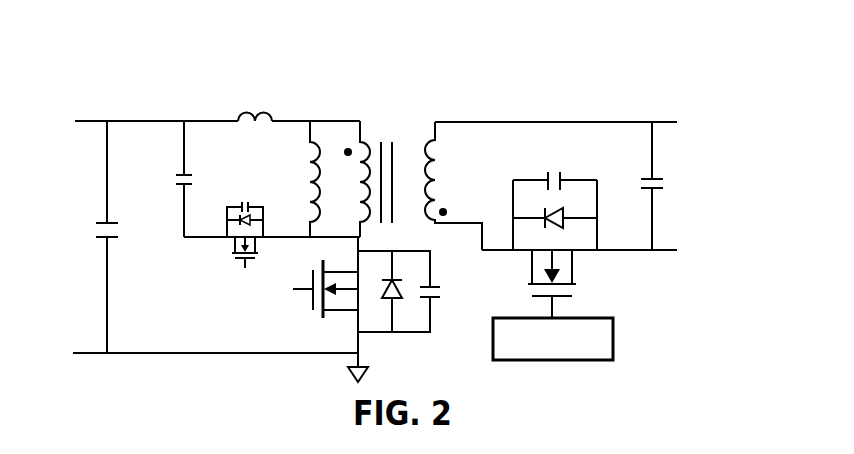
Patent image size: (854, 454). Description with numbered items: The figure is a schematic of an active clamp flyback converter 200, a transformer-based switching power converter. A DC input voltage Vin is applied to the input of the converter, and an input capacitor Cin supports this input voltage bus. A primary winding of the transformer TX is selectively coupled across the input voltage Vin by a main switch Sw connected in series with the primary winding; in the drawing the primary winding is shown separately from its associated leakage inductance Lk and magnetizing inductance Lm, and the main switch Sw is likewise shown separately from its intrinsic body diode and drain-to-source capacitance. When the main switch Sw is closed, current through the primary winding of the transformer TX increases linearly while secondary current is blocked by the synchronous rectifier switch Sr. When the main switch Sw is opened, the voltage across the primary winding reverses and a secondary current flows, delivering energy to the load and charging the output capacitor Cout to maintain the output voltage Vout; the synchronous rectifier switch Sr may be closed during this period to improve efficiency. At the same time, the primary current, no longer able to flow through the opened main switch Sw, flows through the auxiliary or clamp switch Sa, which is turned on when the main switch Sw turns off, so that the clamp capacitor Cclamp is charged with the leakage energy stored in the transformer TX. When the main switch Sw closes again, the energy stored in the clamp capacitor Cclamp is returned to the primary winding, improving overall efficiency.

The active clamp flyback converter 200 is at (327, 80).
The input voltage Vin is at (61, 236).
The input capacitor Cin is at (122, 237).
The clamp capacitor Cclamp is at (157, 179).
The leakage inductance Lk is at (255, 103).
The auxiliary (or clamp) switch Sa is at (226, 235).
The magnetizing inductance Lm is at (298, 179).
The transformer TX is at (413, 172).
The main switch Sw is at (350, 291).
The synchronous rectifier switch Sr is at (555, 266).
The output capacitor Cout is at (630, 186).
The output voltage Vout is at (703, 184).